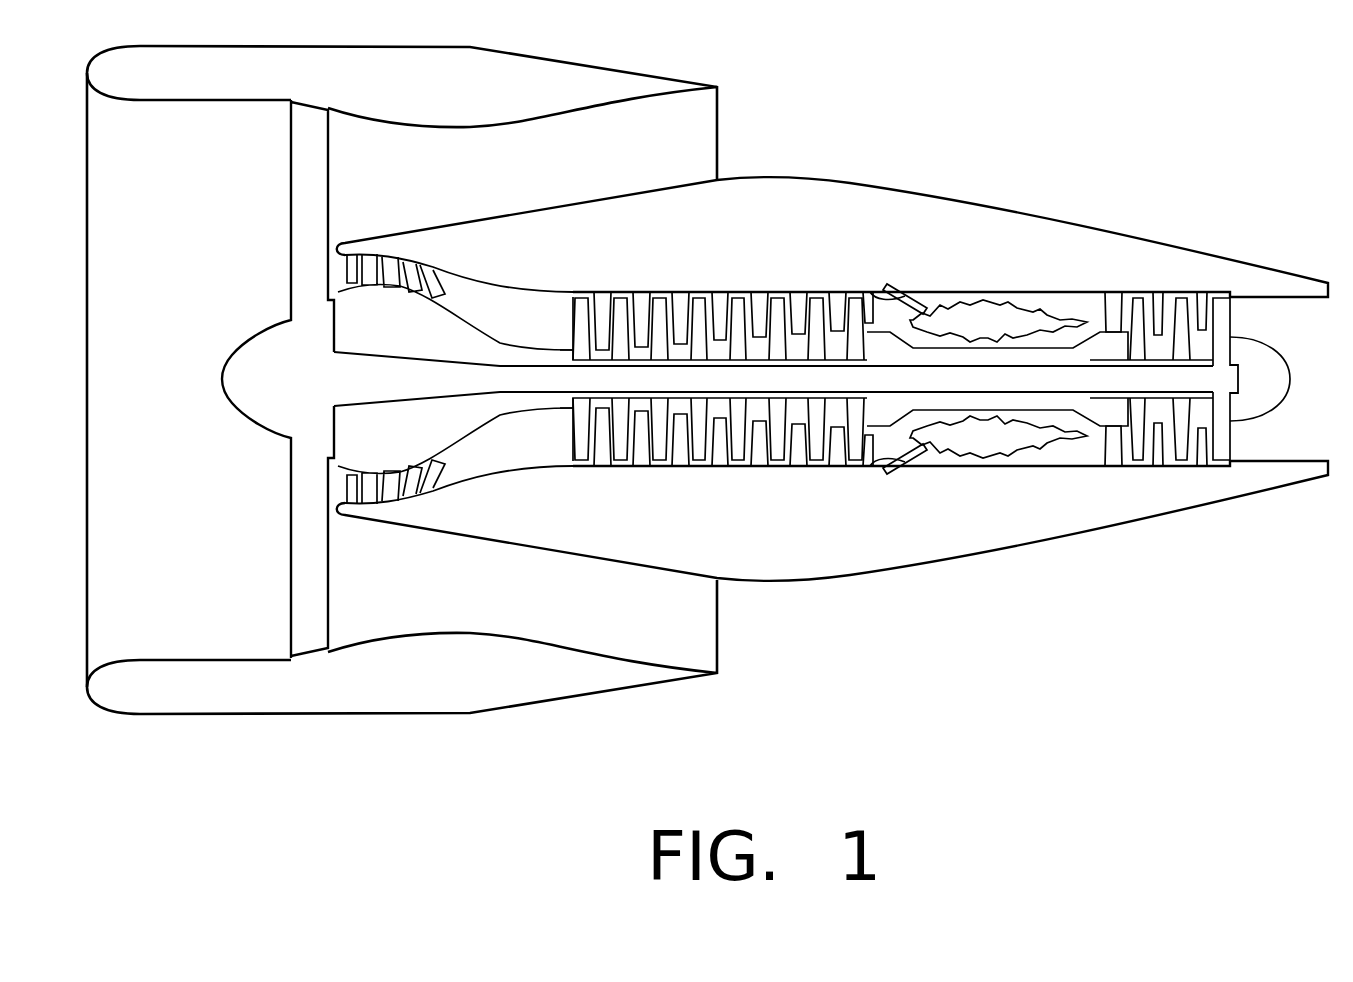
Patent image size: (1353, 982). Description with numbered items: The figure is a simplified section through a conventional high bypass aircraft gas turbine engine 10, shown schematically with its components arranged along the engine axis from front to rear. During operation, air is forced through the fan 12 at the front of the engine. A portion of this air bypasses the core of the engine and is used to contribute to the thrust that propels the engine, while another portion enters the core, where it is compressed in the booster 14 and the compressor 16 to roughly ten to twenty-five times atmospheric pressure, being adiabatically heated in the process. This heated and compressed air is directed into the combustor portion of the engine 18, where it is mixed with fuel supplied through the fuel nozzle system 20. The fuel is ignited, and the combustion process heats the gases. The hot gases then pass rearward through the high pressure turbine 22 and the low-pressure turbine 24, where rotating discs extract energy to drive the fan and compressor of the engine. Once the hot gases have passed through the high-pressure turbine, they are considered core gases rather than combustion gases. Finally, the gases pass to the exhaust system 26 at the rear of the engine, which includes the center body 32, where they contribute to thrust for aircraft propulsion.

The high bypass aircraft gas turbine engine 10 is at (1095, 665).
The fan 12 is at (290, 548).
The booster 14 is at (385, 255).
The compressor 16 is at (688, 298).
The combustor portion of the engine 18 is at (971, 280).
The fuel nozzle system 20 is at (905, 290).
The high pressure turbine 22 is at (1135, 455).
The low-pressure turbine 24 is at (1178, 455).
The exhaust system 26 is at (1310, 278).
The center body 32 is at (1290, 387).